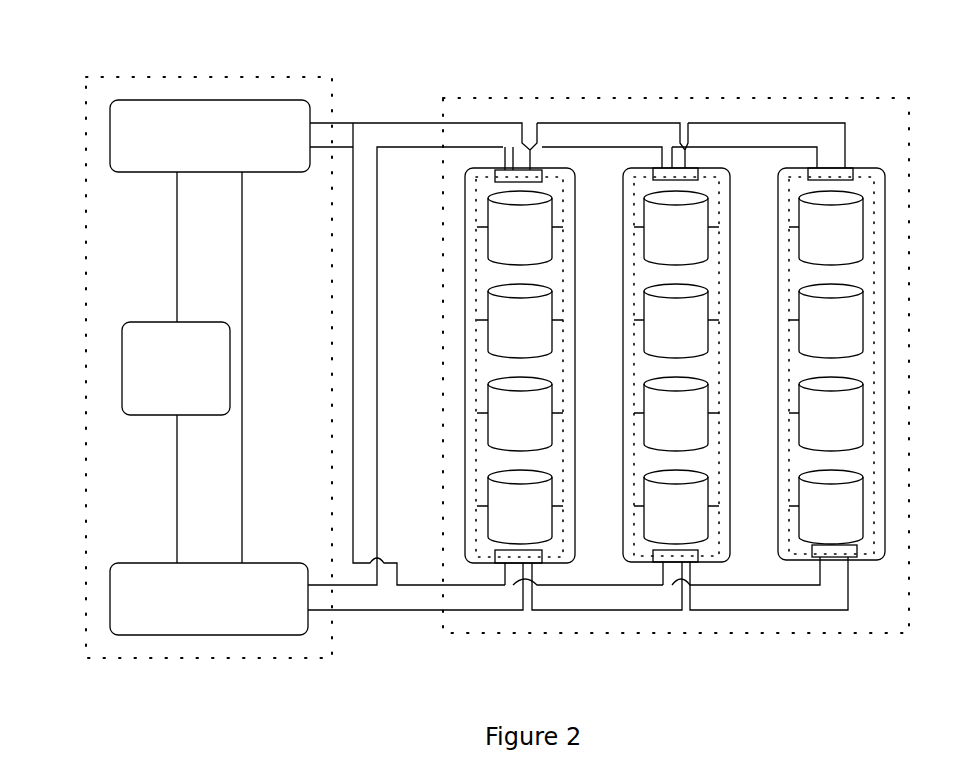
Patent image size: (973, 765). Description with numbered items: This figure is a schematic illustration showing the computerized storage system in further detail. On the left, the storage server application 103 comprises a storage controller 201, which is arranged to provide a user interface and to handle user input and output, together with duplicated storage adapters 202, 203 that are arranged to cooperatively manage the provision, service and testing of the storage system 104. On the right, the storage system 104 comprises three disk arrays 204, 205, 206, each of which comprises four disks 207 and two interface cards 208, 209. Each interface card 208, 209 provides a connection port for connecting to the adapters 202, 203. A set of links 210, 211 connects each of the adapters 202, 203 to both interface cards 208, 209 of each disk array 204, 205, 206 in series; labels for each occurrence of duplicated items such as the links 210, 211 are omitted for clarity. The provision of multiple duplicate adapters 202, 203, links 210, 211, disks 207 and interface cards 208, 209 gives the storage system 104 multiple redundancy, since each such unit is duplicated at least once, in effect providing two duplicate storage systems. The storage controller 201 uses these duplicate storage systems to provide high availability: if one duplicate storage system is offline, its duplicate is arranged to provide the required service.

The storage server application 103 is at (208, 658).
The storage system 104 is at (680, 633).
The storage controller 201 is at (122, 368).
The storage adapter 202 is at (243, 100).
The storage adapter 203 is at (175, 635).
The disk array 204 is at (465, 300).
The disk array 205 is at (625, 423).
The disk array 206 is at (779, 415).
The disk 207 is at (863, 223).
The interface card 208 is at (853, 168).
The interface card 209 is at (857, 553).
The link 210 is at (353, 123).
The link 211 is at (353, 147).